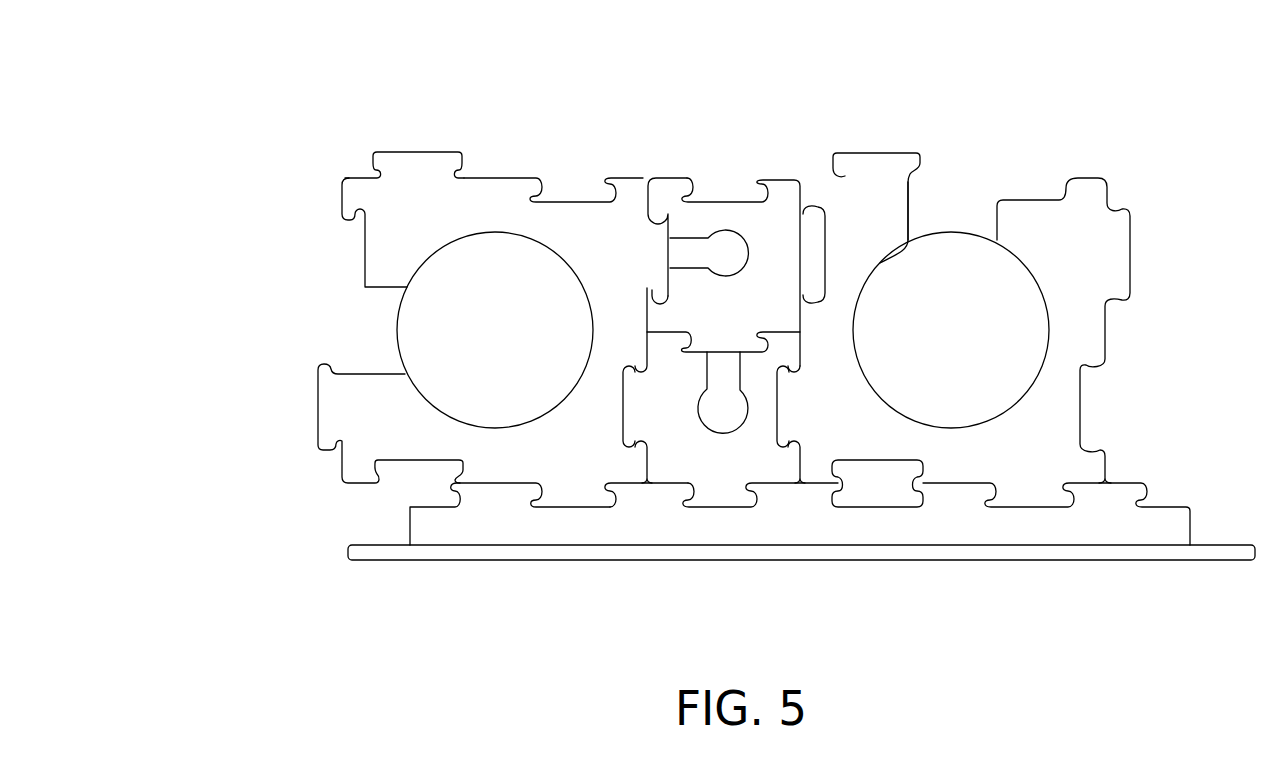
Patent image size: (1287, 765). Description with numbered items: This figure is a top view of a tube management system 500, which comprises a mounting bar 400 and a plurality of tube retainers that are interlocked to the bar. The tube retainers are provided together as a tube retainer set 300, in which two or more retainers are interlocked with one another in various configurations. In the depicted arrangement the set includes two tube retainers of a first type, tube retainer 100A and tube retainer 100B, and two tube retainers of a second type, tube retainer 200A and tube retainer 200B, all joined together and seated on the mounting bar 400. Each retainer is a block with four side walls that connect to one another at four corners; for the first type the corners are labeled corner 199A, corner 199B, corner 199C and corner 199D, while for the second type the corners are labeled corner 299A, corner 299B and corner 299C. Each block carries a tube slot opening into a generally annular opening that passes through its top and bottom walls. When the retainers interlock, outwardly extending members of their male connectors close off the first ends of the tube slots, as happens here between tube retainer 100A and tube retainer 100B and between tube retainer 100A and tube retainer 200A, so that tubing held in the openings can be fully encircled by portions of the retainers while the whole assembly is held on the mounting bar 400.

The tube management system 500 is at (197, 157).
The tube retainer set 300 is at (725, 45).
The mounting bar 400 is at (1120, 520).
The tube retainer 100A is at (762, 233).
The tube retainer 100B is at (720, 458).
The tube retainer 200A is at (400, 212).
The tube retainer 200B is at (1033, 223).
The corner 199A is at (797, 325).
The corner 199B is at (777, 180).
The corner 199C is at (633, 192).
The corner 199D is at (657, 312).
The corner 299A is at (658, 183).
The corner 299B is at (628, 473).
The corner 299C is at (813, 187).